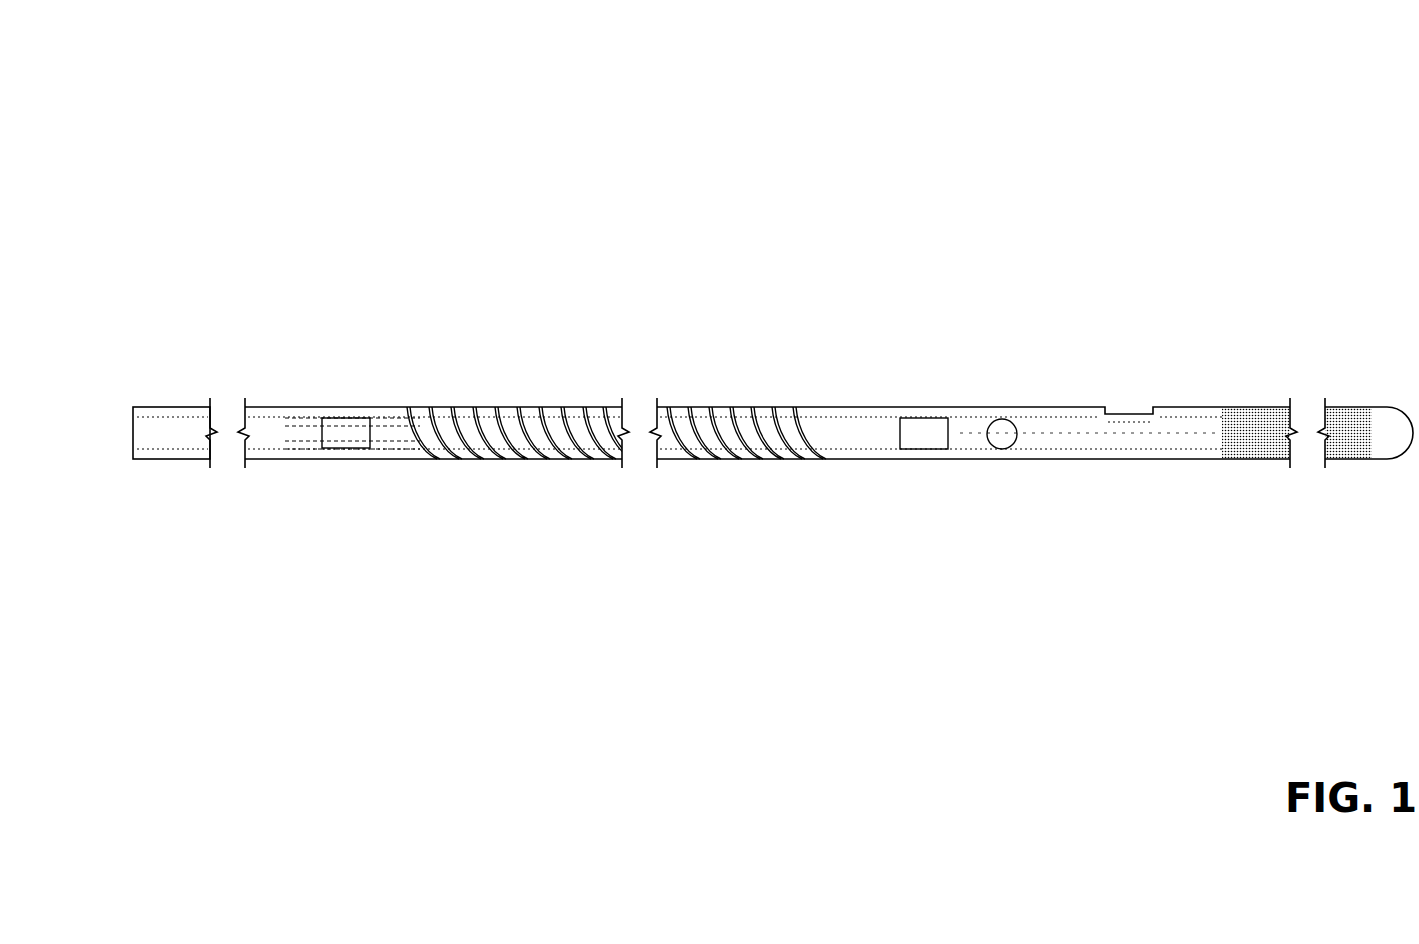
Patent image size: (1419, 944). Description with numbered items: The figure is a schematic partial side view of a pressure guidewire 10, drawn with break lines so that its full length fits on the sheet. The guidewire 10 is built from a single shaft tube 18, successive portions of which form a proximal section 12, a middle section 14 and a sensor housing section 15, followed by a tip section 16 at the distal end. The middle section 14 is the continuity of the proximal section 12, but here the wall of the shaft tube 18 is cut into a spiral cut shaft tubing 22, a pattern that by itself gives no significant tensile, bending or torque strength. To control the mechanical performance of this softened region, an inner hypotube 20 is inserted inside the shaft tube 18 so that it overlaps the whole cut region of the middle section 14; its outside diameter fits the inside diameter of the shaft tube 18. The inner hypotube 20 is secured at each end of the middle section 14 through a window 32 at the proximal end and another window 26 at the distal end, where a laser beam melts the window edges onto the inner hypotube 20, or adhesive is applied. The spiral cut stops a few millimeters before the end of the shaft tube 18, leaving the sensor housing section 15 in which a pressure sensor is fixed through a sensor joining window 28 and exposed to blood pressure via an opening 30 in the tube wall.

The pressure guidewire 10 is at (1187, 131).
The proximal section 12 is at (235, 333).
The middle section 14 is at (777, 335).
The sensor housing section 15 is at (1048, 335).
The tip section 16 is at (1318, 335).
The shaft tube 18 is at (504, 333).
The inner hypotube 20 is at (291, 452).
The spiral cut shaft tubing 22 is at (468, 460).
The window 26 is at (922, 452).
The sensor joining window 28 is at (1010, 450).
The opening 30 is at (1132, 405).
The window 32 is at (350, 452).